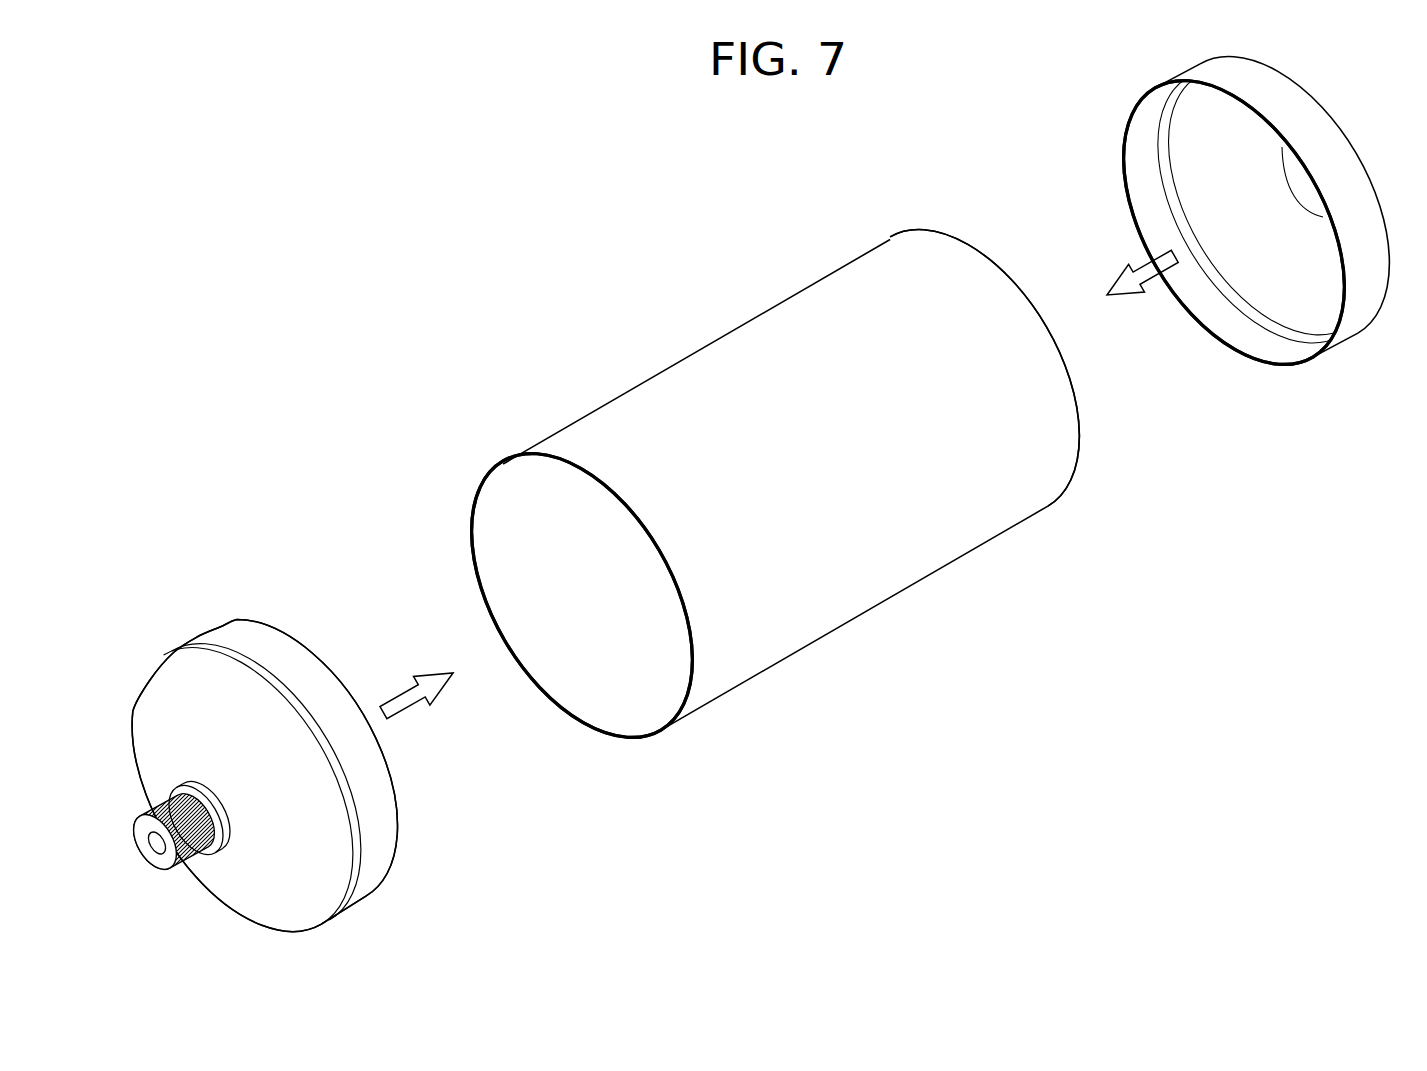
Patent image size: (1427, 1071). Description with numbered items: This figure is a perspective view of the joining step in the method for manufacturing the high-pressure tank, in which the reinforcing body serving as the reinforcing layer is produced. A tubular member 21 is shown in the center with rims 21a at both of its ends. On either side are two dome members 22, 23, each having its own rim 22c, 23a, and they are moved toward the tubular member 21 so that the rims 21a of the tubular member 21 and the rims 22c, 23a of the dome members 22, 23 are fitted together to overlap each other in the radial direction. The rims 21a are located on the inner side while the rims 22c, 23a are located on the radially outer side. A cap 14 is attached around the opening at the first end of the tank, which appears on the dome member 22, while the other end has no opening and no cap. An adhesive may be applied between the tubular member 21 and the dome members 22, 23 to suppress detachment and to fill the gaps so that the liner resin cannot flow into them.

The cap 14 is at (163, 866).
The tubular member 21 is at (736, 330).
The rims of the tubular member 21a is at (938, 240).
The dome member 22 is at (270, 652).
The rim of the dome member 22c is at (385, 767).
The dome member 23 is at (1303, 127).
The rim of the dome member 23a is at (1220, 335).